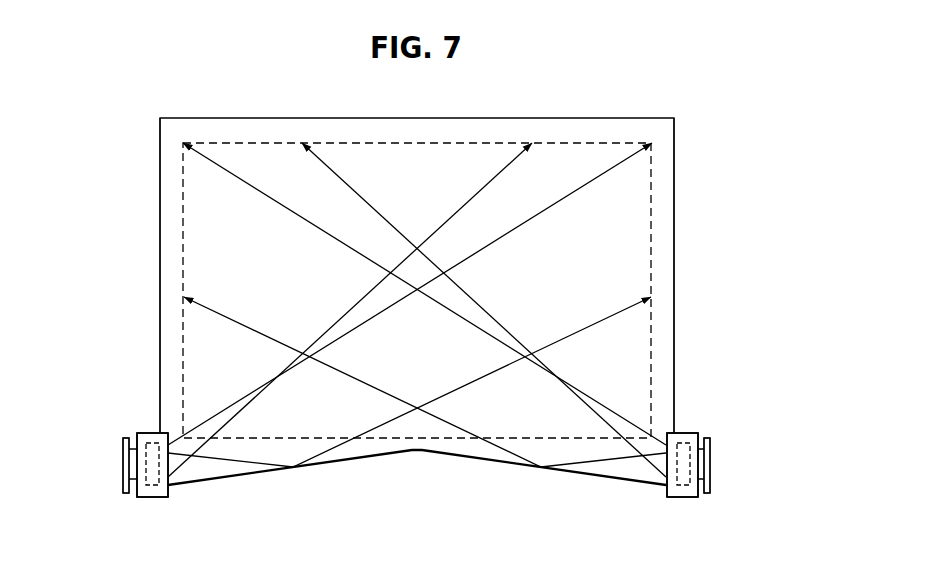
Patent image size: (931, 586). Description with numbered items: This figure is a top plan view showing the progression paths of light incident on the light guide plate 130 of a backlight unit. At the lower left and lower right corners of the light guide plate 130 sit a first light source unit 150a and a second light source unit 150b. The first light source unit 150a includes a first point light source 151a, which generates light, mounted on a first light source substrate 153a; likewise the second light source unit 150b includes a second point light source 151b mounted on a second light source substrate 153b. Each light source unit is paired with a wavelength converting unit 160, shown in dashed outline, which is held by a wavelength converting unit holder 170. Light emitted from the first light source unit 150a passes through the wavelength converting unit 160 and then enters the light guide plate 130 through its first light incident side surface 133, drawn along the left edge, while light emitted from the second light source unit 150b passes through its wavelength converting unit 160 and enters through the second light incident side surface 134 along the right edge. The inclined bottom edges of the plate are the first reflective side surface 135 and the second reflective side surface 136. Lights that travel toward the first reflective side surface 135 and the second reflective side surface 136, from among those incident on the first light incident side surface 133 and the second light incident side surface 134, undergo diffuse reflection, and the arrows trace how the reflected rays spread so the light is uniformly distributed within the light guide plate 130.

The light guide plate 130 is at (663, 190).
The first light incident side surface 133 is at (157, 283).
The second light incident side surface 134 is at (678, 283).
The first reflective side surface 135 is at (305, 473).
The second reflective side surface 136 is at (537, 473).
The first light source unit 150a is at (63, 485).
The second light source unit 150b is at (770, 485).
The first point light source 151a is at (132, 468).
The second point light source 151b is at (702, 468).
The first light source substrate 153a is at (123, 453).
The second light source substrate 153b is at (710, 453).
The wavelength converting unit 160 is at (150, 497).
The wavelength converting unit holder 170 is at (162, 506).